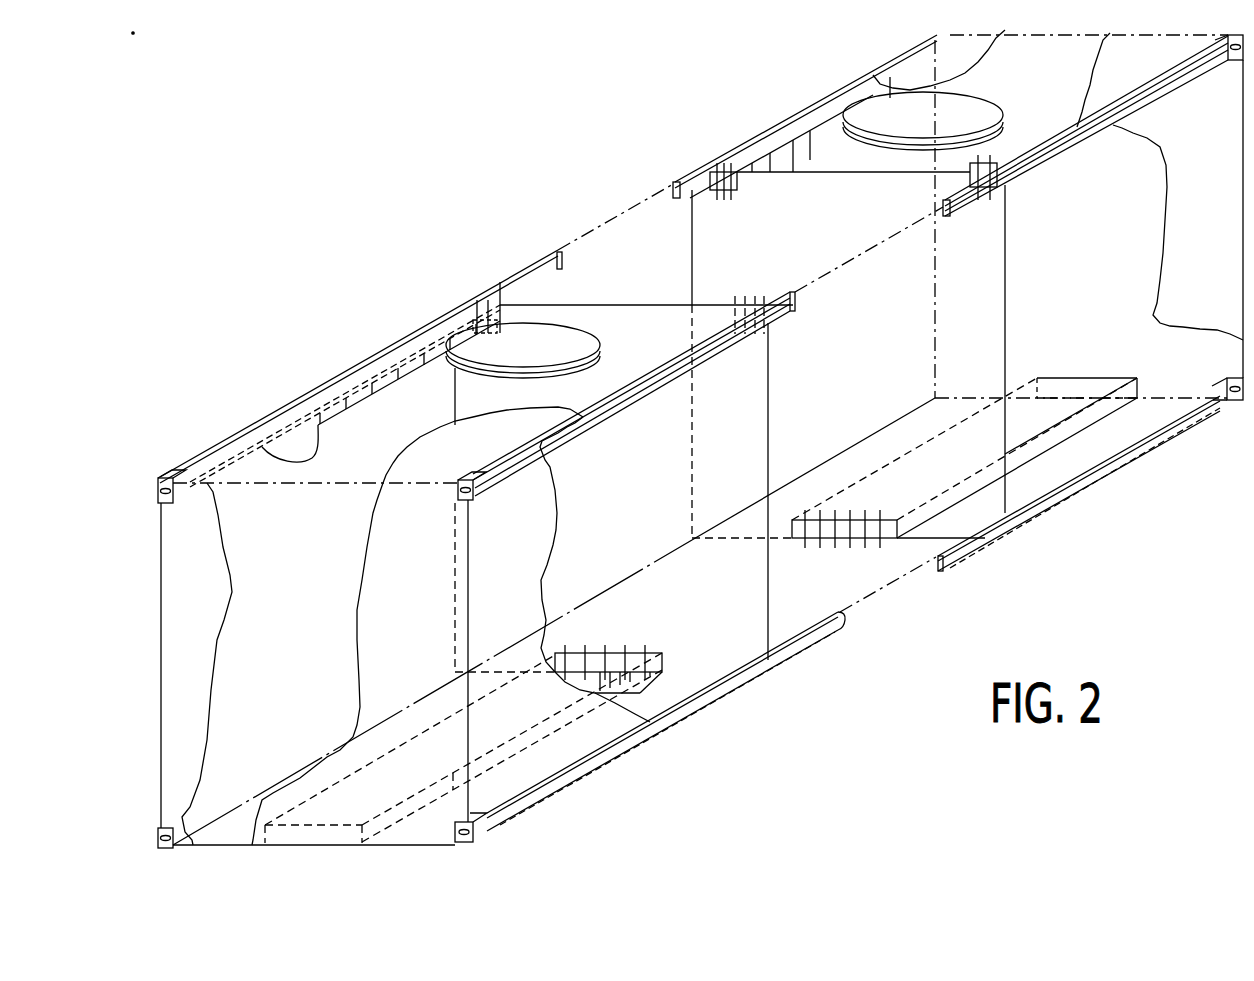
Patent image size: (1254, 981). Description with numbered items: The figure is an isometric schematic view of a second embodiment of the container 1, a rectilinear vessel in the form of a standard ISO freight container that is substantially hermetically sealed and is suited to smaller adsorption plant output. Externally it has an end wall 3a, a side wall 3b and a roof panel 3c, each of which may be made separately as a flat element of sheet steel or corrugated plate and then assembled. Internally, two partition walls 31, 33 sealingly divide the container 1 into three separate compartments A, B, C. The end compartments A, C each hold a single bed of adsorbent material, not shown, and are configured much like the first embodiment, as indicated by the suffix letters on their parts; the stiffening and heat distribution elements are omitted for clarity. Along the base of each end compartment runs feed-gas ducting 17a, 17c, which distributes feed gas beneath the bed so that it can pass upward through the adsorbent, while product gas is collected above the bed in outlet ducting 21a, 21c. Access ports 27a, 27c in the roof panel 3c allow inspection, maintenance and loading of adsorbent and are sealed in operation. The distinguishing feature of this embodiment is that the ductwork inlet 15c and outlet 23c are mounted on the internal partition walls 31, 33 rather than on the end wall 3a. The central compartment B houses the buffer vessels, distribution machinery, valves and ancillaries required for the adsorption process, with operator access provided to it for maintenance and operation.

The container 1 is at (538, 220).
The end wall 3a is at (418, 638).
The side wall 3b is at (519, 586).
The roof panel 3c is at (1137, 75).
The outlet ducting 21a is at (370, 376).
The outlet ducting 21c is at (797, 137).
The outlet 23c is at (737, 190).
The access port 27a is at (577, 342).
The access port 27c is at (970, 112).
The partition wall 31 is at (634, 508).
The partition wall 33 is at (875, 348).
The ducting 17a is at (343, 798).
The ducting 17c is at (1062, 390).
The inlet 15c is at (837, 530).
The end compartment A is at (670, 685).
The central compartment B is at (870, 580).
The end compartment C is at (1077, 450).